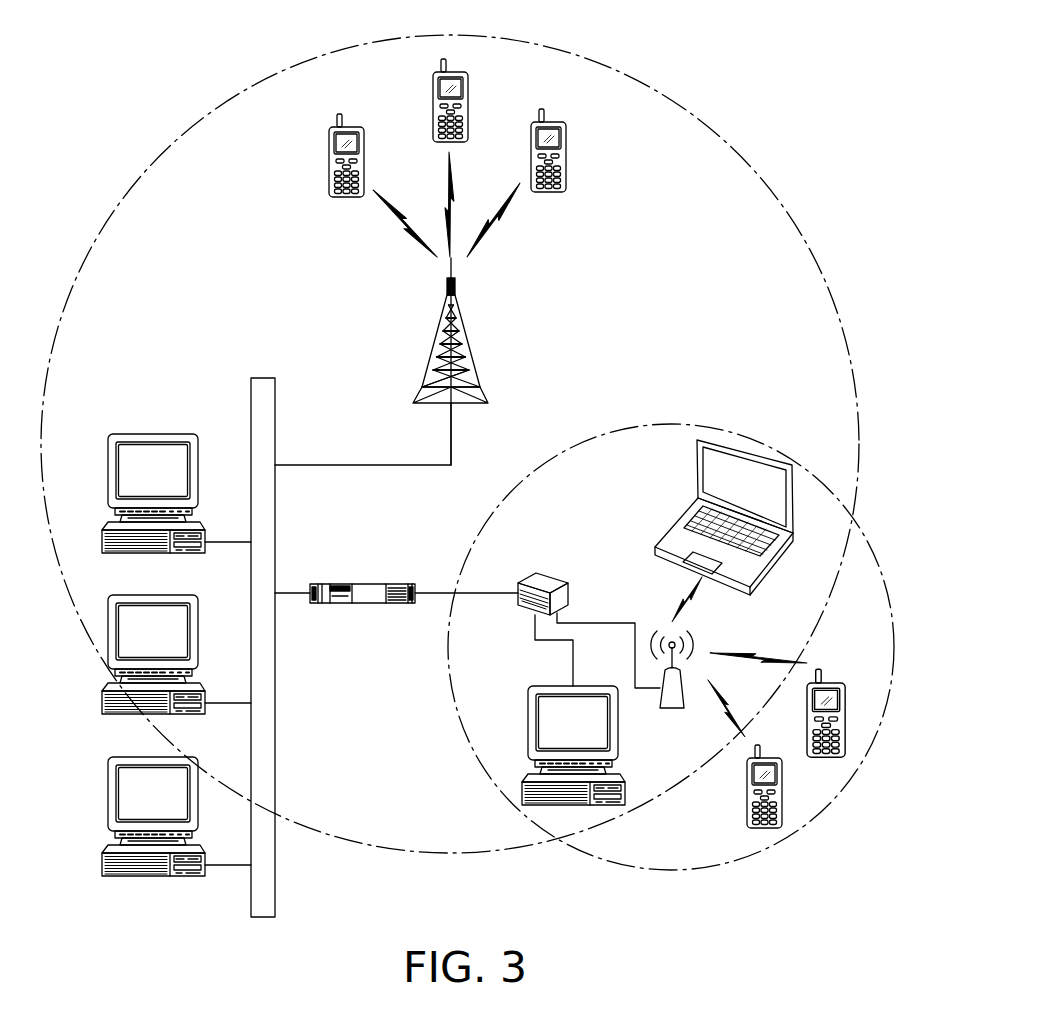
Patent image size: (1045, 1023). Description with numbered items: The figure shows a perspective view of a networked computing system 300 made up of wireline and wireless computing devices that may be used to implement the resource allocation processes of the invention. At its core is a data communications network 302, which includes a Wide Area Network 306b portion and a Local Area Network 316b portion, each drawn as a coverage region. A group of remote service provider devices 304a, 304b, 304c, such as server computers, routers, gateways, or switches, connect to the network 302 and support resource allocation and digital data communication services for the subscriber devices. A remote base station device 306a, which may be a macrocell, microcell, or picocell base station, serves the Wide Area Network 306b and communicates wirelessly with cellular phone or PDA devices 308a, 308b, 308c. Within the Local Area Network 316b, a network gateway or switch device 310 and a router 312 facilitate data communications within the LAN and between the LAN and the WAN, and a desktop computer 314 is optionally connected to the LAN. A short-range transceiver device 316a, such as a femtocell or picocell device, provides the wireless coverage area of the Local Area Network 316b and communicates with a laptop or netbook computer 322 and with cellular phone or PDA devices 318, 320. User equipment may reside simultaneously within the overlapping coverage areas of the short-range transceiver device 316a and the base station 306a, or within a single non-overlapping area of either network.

The networked computing system 300 is at (204, 42).
The data communications network 302 is at (251, 415).
The remote service provider device 304a is at (140, 434).
The remote service provider device 304b is at (145, 595).
The remote service provider device 304c is at (130, 757).
The remote base station device 306a is at (470, 345).
The Wide Area Network 306b is at (766, 183).
The cellular phone or PDA device 308a is at (329, 150).
The cellular phone or PDA device 308b is at (433, 95).
The cellular phone or PDA device 308c is at (566, 152).
The network gateway or switch device 310 is at (370, 584).
The router 312 is at (558, 580).
The desktop computer 314 is at (542, 686).
The short-range transceiver device 316a is at (672, 710).
The Local Area Network 316b is at (618, 427).
The cellular phone or PDA device 318 is at (764, 828).
The cellular phone or PDA device 320 is at (828, 757).
The laptop or netbook computer 322 is at (690, 520).